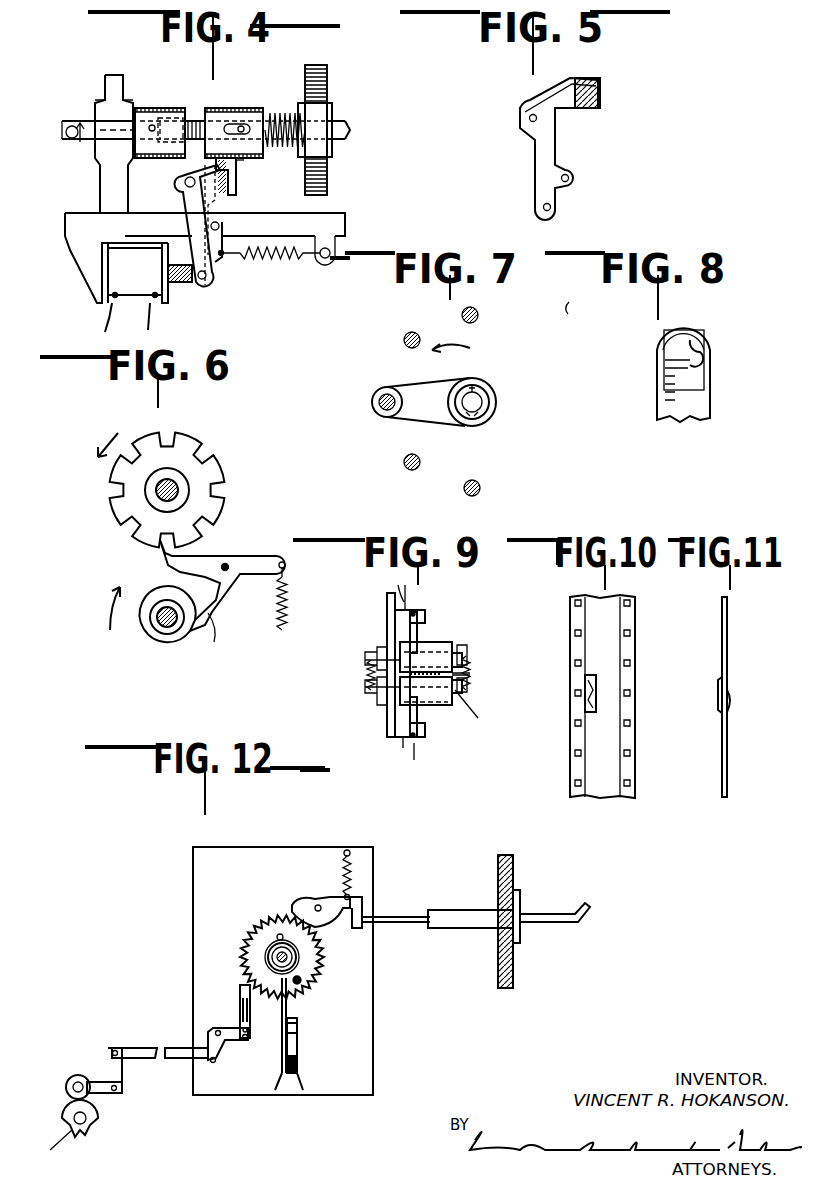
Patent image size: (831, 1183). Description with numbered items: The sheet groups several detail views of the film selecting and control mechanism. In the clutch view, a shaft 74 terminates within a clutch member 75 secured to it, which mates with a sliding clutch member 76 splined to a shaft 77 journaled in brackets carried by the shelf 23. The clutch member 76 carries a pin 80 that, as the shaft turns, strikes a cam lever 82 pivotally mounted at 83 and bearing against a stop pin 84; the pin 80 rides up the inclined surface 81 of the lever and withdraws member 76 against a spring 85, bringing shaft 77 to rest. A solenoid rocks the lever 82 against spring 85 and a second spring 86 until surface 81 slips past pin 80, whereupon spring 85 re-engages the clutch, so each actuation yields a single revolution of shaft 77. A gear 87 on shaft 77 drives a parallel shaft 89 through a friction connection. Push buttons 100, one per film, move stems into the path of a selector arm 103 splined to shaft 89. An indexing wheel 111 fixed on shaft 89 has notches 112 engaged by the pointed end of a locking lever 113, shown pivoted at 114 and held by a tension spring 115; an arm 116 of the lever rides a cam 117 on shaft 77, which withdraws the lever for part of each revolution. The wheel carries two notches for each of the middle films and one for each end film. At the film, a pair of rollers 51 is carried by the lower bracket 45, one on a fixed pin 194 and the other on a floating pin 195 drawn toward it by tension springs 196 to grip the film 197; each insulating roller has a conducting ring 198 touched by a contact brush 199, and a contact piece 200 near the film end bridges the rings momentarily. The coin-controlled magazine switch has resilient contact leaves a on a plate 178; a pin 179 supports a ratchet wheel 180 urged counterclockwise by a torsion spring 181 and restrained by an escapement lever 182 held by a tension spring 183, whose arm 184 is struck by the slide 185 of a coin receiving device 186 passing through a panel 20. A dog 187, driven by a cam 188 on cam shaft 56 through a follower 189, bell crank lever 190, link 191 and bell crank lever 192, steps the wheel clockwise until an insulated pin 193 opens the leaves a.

In FIG. 4, the shaft 74 is at (85, 137).
In FIG. 4, the clutch member 75 is at (152, 105).
In FIG. 4, the sliding clutch member 76 is at (226, 106).
In FIG. 4, the shaft 77 is at (193, 125).
In FIG. 6, the shaft 77 is at (165, 627).
In FIG. 4, the pin 80 is at (244, 162).
In FIG. 4, the inclined surface 81 is at (236, 185).
In FIG. 5, the inclined surface 81 is at (592, 76).
In FIG. 4, the cam lever 82 is at (212, 202).
In FIG. 5, the cam lever 82 is at (540, 137).
In FIG. 4, the pivot 83 is at (184, 182).
In FIG. 4, the stop pin 84 is at (219, 226).
In FIG. 4, the spring 85 is at (285, 112).
In FIG. 4, the second spring 86 is at (262, 257).
In FIG. 4, the gear 87 is at (327, 92).
In FIG. 4, the shelf 23 is at (325, 218).
In FIG. 7, the shaft 89 is at (478, 400).
In FIG. 6, the shaft 89 is at (178, 490).
In FIG. 7, the push buttons 100 is at (478, 315).
In FIG. 7, the selector arm 103 is at (435, 420).
In FIG. 8, the selector arm 103 is at (700, 395).
In FIG. 6, the indexing wheel 111 is at (192, 447).
In FIG. 6, the notches 112 is at (168, 437).
In FIG. 6, the locking lever 113 is at (205, 558).
In FIG. 6, the pivot pin 114 is at (229, 565).
In FIG. 6, the tension spring 115 is at (287, 613).
In FIG. 6, the arm 116 is at (220, 637).
In FIG. 6, the cam 117 is at (152, 625).
In FIG. 9, the lower brackets 45 is at (392, 720).
In FIG. 9, the rollers 51 is at (442, 652).
In FIG. 9, the fixed pin 194 is at (483, 711).
In FIG. 9, the floating pin 195 is at (455, 655).
In FIG. 9, the tension springs 196 is at (365, 683).
In FIG. 9, the film 197 is at (462, 695).
In FIG. 10, the film 197 is at (613, 622).
In FIG. 11, the film 197 is at (727, 636).
In FIG. 9, the ring 198 is at (425, 650).
In FIG. 9, the contact brush 199 is at (415, 635).
In FIG. 10, the contact piece 200 is at (596, 693).
In FIG. 11, the contact piece 200 is at (716, 700).
In FIG. 12, the plate 178 is at (226, 855).
In FIG. 12, the pin 179 is at (270, 958).
In FIG. 12, the ratchet wheel 180 is at (274, 920).
In FIG. 12, the torsion spring 181 is at (278, 948).
In FIG. 12, the escapement lever 182 is at (297, 905).
In FIG. 12, the tension spring 183 is at (350, 868).
In FIG. 12, the downwardly extending arm 184 is at (365, 910).
In FIG. 12, the slide 185 is at (403, 915).
In FIG. 12, the coin receiving device 186 is at (462, 910).
In FIG. 12, the panel 20 is at (513, 868).
In FIG. 12, the dog 187 is at (238, 1020).
In FIG. 12, the cam 188 is at (95, 1125).
In FIG. 12, the follower 189 is at (78, 1075).
In FIG. 12, the bell crank lever 190 is at (105, 1092).
In FIG. 12, the link 191 is at (172, 1045).
In FIG. 12, the bell crank lever 192 is at (222, 1060).
In FIG. 12, the insulated pin 193 is at (300, 983).
In FIG. 12, the cam shaft 56 is at (49, 1144).
In FIG. 12, the resilient contact leaves a is at (297, 1045).